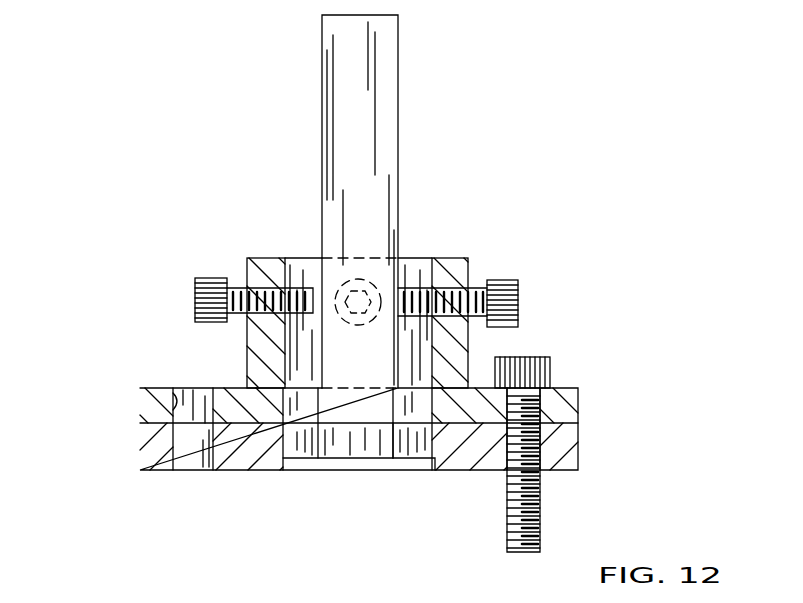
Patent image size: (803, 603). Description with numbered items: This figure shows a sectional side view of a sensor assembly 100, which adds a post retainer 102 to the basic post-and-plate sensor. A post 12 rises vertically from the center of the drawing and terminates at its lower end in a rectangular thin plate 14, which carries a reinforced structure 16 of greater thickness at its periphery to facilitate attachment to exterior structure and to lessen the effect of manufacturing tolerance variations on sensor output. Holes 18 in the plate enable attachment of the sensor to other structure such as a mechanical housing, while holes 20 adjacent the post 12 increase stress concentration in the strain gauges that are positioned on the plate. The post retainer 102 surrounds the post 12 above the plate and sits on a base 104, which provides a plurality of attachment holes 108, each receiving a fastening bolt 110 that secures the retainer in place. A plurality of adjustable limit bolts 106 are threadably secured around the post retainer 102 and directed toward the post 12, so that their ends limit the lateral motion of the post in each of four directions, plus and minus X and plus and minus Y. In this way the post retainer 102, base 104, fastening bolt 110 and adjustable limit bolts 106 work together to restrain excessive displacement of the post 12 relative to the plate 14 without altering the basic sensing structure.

The sensor assembly 100 is at (474, 195).
The post 12 is at (398, 148).
The rectangular thin plate 14 is at (348, 463).
The reinforced structure 16 is at (245, 452).
The holes 18 is at (175, 441).
The holes 20 is at (412, 462).
The post retainer 102 is at (250, 345).
The base 104 is at (150, 393).
The adjustable limit bolts 106 is at (214, 278).
The attachment holes 108 is at (173, 413).
The fastening bolt 110 is at (550, 365).